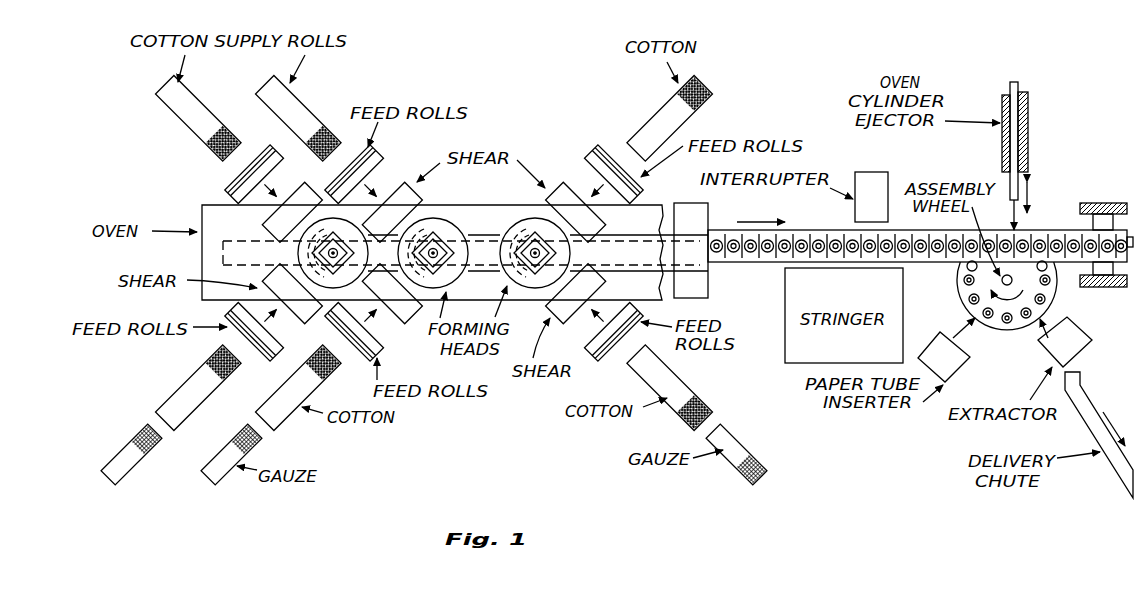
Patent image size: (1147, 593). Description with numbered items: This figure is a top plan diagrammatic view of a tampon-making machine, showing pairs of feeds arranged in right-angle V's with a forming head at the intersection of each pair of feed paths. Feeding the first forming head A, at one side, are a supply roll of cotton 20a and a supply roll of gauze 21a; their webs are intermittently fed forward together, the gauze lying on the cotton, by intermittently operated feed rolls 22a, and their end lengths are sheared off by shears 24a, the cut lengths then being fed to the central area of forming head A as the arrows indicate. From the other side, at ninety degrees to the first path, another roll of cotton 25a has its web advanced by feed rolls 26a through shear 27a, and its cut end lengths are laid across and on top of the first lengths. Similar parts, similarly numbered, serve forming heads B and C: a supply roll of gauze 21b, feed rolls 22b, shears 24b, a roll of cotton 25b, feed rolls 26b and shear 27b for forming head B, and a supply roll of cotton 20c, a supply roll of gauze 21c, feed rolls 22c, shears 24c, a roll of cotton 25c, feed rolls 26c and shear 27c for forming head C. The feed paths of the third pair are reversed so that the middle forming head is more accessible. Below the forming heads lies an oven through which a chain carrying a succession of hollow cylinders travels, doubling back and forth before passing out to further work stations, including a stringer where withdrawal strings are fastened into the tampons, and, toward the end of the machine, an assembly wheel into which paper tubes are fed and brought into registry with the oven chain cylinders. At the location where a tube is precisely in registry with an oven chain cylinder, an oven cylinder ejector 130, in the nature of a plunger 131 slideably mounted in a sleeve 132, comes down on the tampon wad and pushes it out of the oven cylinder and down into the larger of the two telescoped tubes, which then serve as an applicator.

The supply roll of cotton 20a is at (200, 380).
The supply roll of cotton 20c is at (287, 425).
The supply roll of gauze 21a is at (127, 458).
The supply roll of gauze 21b is at (217, 475).
The supply roll of gauze 21c is at (747, 473).
The feed rolls 22a is at (262, 352).
The feed rolls 22b is at (365, 350).
The feed rolls 22c is at (611, 352).
The shears 24a is at (307, 313).
The shears 24b is at (412, 320).
The shears 24c is at (567, 310).
The roll of cotton 25a is at (200, 133).
The roll of cotton 25b is at (300, 117).
The roll of cotton 25c is at (670, 110).
The feed rolls 26a is at (232, 185).
The feed rolls 26b is at (380, 165).
The feed rolls 26c is at (598, 143).
The shear 27a is at (310, 174).
The shear 27b is at (432, 196).
The shear 27c is at (570, 196).
The oven cylinder ejector 130 is at (1047, 146).
The plunger 131 is at (1018, 178).
The sleeve 132 is at (1030, 118).
The forming head A is at (293, 253).
The forming head B is at (460, 222).
The forming head C is at (531, 212).